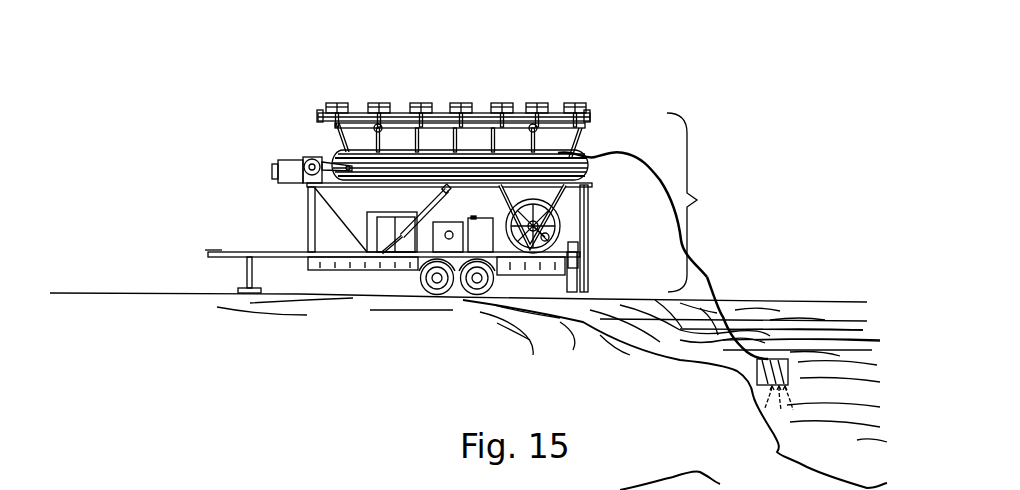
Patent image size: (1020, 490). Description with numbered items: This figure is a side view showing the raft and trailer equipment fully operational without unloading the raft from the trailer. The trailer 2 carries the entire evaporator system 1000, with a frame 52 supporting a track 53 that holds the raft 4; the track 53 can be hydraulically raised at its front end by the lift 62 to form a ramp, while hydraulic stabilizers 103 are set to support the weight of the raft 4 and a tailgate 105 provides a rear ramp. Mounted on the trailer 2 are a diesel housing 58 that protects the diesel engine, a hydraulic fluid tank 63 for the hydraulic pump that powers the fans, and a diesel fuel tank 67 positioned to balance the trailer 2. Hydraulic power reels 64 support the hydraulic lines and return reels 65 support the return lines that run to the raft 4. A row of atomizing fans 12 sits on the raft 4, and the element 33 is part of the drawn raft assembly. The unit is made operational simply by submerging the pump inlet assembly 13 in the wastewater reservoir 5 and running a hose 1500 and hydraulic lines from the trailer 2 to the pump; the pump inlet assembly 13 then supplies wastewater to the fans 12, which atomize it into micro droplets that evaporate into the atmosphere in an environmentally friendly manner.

The trailer 2 is at (256, 252).
The raft 4 is at (572, 156).
The wastewater reservoir 5 is at (720, 351).
The atomizing fans 12 is at (382, 105).
The pump inlet assembly 13 is at (783, 360).
The rotary drum screen 33 is at (432, 168).
The frame 52 is at (311, 207).
The track 53 is at (618, 153).
The diesel housing 58 is at (383, 232).
The lift 62 is at (430, 206).
The hydraulic fluid tank 63 is at (449, 237).
The hydraulic power reels 64 is at (540, 208).
The return reels 65 is at (552, 220).
The diesel fuel tank 67 is at (480, 230).
The hydraulic stabilizers 103 is at (575, 275).
The tailgate 105 is at (588, 238).
The evaporator system 1000 is at (711, 202).
The suction hose 1500 is at (705, 277).